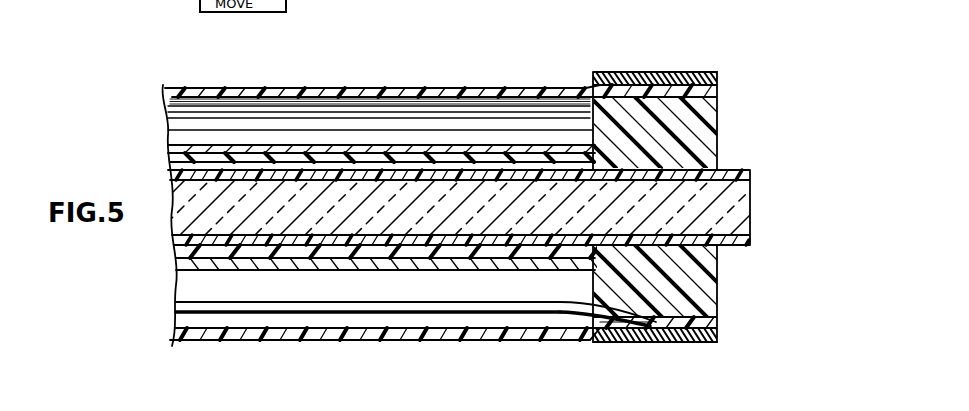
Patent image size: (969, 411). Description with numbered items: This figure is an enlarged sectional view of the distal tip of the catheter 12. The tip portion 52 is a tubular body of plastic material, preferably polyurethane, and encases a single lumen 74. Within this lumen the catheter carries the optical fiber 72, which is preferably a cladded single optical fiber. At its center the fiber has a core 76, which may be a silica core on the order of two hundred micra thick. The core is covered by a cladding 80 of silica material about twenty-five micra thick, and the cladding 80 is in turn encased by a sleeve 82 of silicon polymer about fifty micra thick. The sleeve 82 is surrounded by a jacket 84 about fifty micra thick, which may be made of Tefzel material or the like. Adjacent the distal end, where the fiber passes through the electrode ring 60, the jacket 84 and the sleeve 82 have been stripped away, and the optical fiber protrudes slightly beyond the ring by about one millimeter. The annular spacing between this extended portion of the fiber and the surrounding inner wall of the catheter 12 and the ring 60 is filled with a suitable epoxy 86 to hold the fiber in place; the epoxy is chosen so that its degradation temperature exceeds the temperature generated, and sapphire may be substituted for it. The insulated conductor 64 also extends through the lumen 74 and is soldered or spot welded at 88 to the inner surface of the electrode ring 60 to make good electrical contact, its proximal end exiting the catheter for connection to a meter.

The catheter 12 is at (422, 84).
The tip portion 52 is at (528, 88).
The optical fiber 72 is at (325, 136).
The lumen 74 is at (462, 122).
The core 76 is at (527, 210).
The cladding 80 is at (470, 246).
The sleeve 82 is at (380, 248).
The jacket 84 is at (307, 264).
The insulated conductor 64 is at (252, 308).
The electrode ring 60 is at (668, 88).
The epoxy 86 is at (700, 128).
The solder or spot weld 88 is at (656, 322).